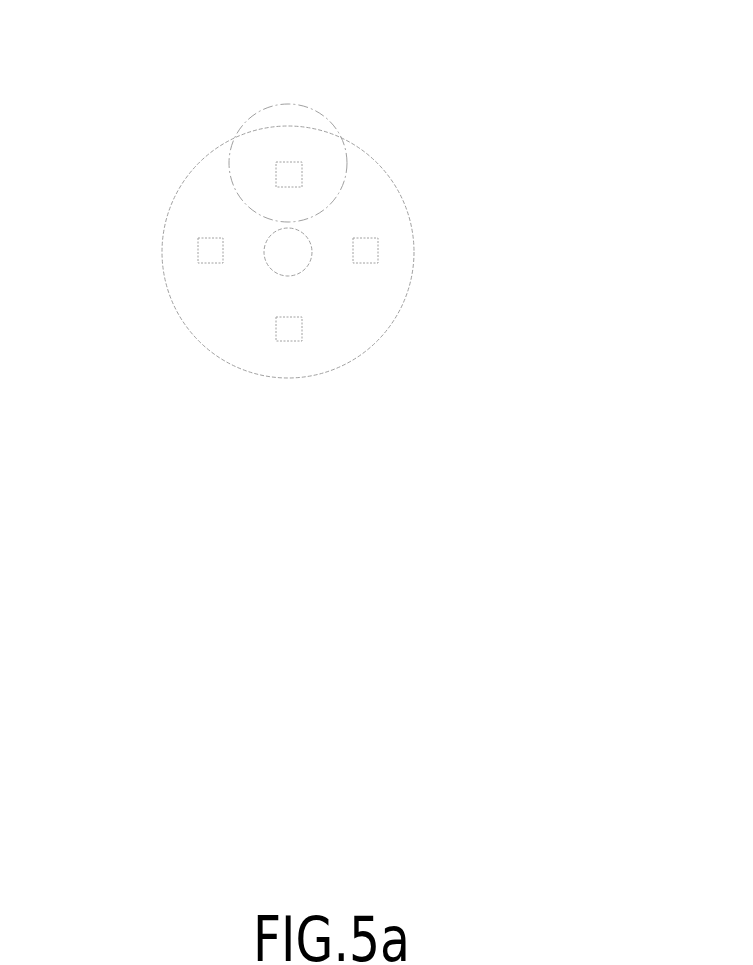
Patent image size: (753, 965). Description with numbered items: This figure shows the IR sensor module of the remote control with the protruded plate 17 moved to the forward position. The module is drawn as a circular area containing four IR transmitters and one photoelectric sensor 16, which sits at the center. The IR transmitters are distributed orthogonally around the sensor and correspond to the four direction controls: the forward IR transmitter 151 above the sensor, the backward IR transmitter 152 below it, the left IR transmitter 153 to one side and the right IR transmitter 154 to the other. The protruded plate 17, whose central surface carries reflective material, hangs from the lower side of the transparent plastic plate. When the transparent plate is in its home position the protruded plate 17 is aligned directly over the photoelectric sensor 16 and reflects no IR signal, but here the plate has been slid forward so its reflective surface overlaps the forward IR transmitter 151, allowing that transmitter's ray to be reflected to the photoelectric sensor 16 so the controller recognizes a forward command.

The photoelectric sensor 16 is at (287, 252).
The protruded plate 17 is at (293, 118).
The IR transmitter - Forward 151 is at (290, 172).
The IR transmitter - Backward 152 is at (290, 332).
The IR transmitter - Left 153 is at (207, 248).
The IR transmitter - Right 154 is at (372, 253).